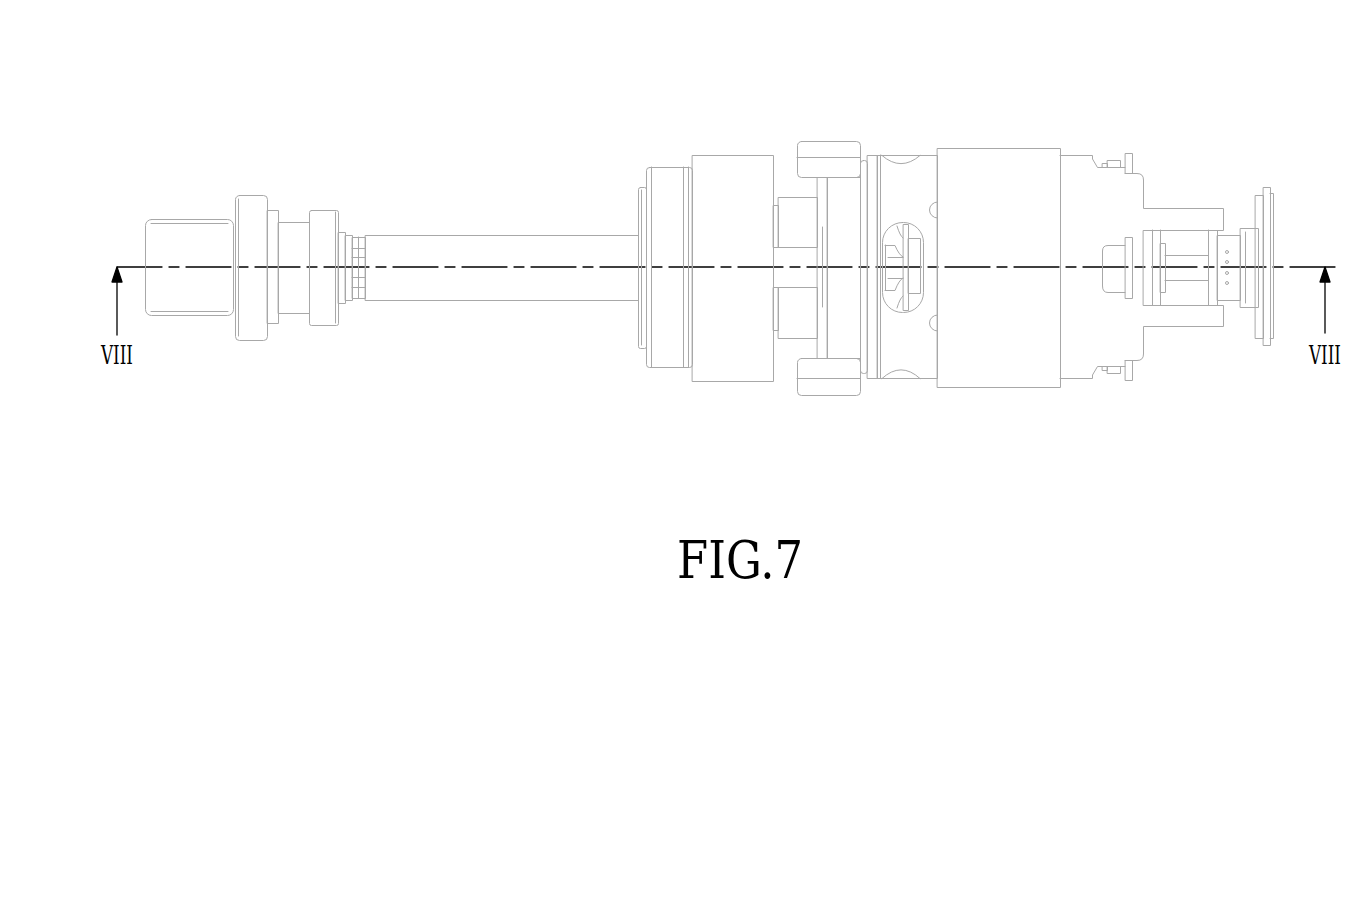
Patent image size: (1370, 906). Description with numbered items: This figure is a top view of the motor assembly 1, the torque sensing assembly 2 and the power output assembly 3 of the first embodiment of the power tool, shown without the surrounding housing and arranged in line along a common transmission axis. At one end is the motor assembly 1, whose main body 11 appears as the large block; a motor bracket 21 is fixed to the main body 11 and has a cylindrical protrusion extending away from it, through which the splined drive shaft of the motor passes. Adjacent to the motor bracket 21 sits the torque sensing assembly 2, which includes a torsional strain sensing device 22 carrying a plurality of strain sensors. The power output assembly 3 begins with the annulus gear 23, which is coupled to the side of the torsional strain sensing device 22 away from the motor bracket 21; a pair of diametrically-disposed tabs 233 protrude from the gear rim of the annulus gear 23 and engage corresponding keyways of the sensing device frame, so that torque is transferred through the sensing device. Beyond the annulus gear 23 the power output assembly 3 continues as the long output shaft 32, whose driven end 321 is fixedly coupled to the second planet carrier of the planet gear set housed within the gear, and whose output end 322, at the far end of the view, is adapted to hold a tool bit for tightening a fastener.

The motor assembly 1 is at (1084, 140).
The main body 11 is at (1008, 162).
The torque sensing assembly 2 is at (735, 141).
The motor bracket 21 is at (837, 367).
The torsional strain sensing device 22 is at (803, 160).
The annulus gear 23 is at (725, 372).
The tabs 233 is at (835, 158).
The power output assembly 3 is at (428, 218).
The output shaft 32 is at (416, 290).
The driven end 321 is at (628, 290).
The output end 322 is at (203, 300).